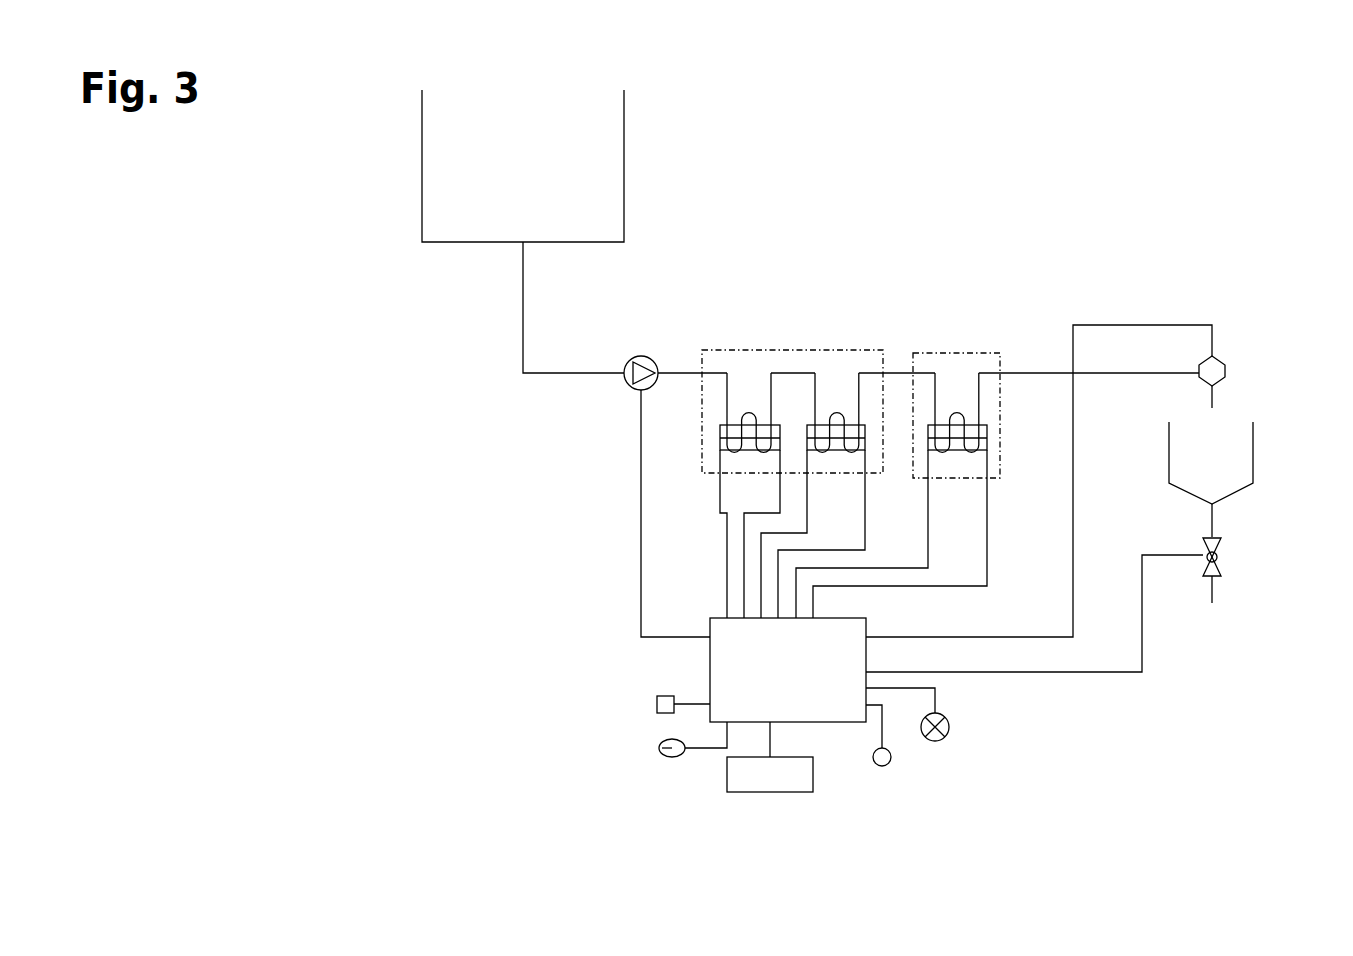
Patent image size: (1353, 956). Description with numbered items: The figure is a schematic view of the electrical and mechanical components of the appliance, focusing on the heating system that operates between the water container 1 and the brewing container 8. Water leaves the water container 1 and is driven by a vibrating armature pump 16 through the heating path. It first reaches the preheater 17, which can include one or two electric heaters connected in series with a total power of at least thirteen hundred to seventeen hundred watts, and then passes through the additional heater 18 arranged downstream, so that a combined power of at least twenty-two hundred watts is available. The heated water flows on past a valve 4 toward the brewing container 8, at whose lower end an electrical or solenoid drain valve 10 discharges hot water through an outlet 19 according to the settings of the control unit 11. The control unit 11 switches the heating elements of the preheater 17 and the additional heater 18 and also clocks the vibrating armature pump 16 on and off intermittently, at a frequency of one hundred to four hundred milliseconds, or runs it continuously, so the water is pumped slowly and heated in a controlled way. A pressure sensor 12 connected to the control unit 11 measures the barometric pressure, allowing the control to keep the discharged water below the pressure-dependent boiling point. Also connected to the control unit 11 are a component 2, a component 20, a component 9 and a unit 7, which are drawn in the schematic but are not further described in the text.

The water container 1 is at (624, 200).
The vibrating armature pump 16 is at (654, 361).
The preheater 17 is at (780, 352).
The additional heater 18 is at (968, 353).
The outlet valve 4 is at (1215, 356).
The brewing container 8 is at (1253, 474).
The drain valve 10 is at (1221, 557).
The outlet pipe 19 is at (1214, 592).
The control unit 11 is at (752, 688).
The indicator lamp 2 is at (948, 716).
The pressure sensor 12 is at (892, 762).
The switch 20 is at (657, 704).
The sensor 9 is at (660, 748).
The power supply unit 7 is at (747, 770).